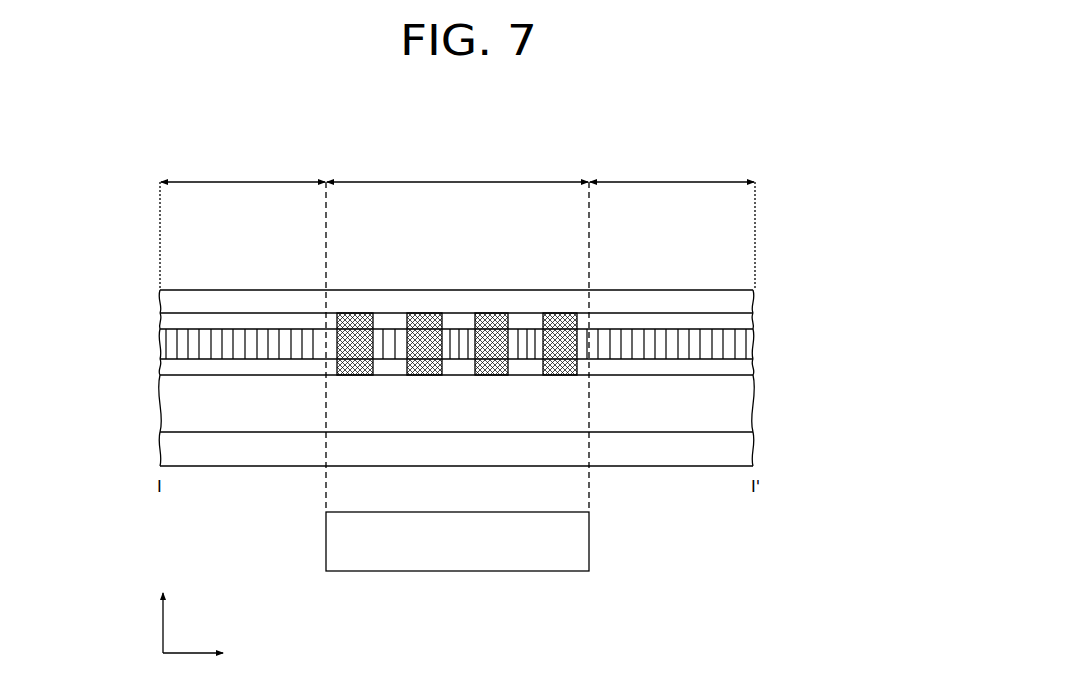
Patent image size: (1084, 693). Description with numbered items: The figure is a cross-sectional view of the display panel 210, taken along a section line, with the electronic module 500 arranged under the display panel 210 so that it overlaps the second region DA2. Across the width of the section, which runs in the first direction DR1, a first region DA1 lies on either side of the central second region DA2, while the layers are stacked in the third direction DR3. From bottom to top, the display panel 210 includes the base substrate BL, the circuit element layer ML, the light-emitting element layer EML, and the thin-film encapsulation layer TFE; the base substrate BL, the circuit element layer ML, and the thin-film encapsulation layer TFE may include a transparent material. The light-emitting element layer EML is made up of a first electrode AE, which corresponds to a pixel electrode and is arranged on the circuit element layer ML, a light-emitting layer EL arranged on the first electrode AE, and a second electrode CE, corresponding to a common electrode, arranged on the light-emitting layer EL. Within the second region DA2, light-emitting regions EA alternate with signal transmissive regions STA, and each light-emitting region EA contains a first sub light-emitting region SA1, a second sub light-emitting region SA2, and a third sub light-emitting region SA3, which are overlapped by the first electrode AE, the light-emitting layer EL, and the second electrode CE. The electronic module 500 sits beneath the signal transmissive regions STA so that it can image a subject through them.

The display panel 210 is at (810, 184).
The electronic module 500 is at (580, 540).
The thin-film encapsulation layer TFE is at (752, 302).
The second electrode CE is at (752, 320).
The light-emitting layer EL is at (752, 342).
The first electrode AE is at (752, 365).
The light-emitting element layer EML is at (835, 310).
The circuit element layer ML is at (750, 400).
The base substrate BL is at (745, 448).
The first region DA1 is at (457, 169).
The second region DA2 is at (457, 169).
The light-emitting region EA is at (533, 237).
The signal transmissive region STA is at (355, 318).
The first sub light-emitting region SA1 is at (445, 318).
The second sub light-emitting region SA2 is at (457, 318).
The third sub light-emitting region SA3 is at (470, 318).
The first direction DR1 is at (214, 653).
The third direction DR3 is at (163, 611).